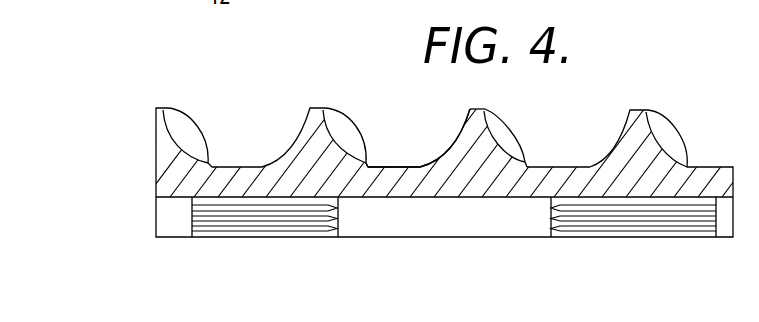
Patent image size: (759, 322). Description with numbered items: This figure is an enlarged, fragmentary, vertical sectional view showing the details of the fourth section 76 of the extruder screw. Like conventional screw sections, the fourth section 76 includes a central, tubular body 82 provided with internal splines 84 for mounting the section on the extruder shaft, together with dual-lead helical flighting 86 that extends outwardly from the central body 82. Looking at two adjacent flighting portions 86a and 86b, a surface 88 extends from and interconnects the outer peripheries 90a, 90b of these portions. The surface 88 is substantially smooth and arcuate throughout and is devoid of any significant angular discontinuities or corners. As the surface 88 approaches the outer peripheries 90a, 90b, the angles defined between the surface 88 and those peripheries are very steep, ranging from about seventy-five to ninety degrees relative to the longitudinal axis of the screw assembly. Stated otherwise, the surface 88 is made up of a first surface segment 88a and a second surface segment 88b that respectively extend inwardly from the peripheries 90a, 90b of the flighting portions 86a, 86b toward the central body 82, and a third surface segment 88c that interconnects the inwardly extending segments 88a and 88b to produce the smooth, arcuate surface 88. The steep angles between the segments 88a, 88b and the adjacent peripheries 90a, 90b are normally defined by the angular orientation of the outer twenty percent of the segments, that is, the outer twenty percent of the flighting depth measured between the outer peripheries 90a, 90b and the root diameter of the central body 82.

The fourth section 76 is at (700, 168).
The central tubular body 82 is at (434, 188).
The internal splines 84 is at (252, 228).
The dual-lead helical flighting 86 is at (652, 118).
The flighting portion 86a is at (347, 128).
The flighting portion 86b is at (523, 162).
The surface 88 is at (401, 143).
The first surface segment 88a is at (340, 115).
The second surface segment 88b is at (465, 137).
The third surface segment 88c is at (385, 168).
The outer periphery 90a is at (313, 108).
The outer periphery 90b is at (477, 110).